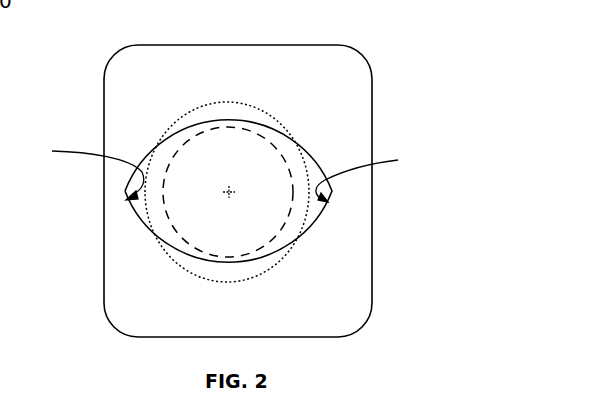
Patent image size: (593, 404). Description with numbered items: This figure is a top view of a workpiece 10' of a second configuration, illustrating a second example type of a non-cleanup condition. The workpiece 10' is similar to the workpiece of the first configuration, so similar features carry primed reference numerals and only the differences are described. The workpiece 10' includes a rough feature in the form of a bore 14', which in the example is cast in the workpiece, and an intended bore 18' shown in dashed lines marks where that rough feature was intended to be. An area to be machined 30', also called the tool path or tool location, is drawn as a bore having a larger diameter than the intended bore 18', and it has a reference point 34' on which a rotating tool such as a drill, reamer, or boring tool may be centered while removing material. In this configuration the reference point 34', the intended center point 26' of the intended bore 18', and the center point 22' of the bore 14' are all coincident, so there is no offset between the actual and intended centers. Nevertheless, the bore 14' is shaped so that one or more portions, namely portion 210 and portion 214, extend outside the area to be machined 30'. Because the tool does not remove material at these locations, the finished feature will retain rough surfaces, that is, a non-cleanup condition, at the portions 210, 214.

The workpiece 10' is at (195, 191).
The bore 14' is at (213, 245).
The intended bore 18' is at (176, 219).
The center point 22' is at (359, 129).
The intended center point 26' is at (229, 192).
The area to be machined 30' is at (227, 141).
The reference point 34' is at (229, 192).
The portion 210 is at (80, 169).
The portion 214 is at (378, 174).